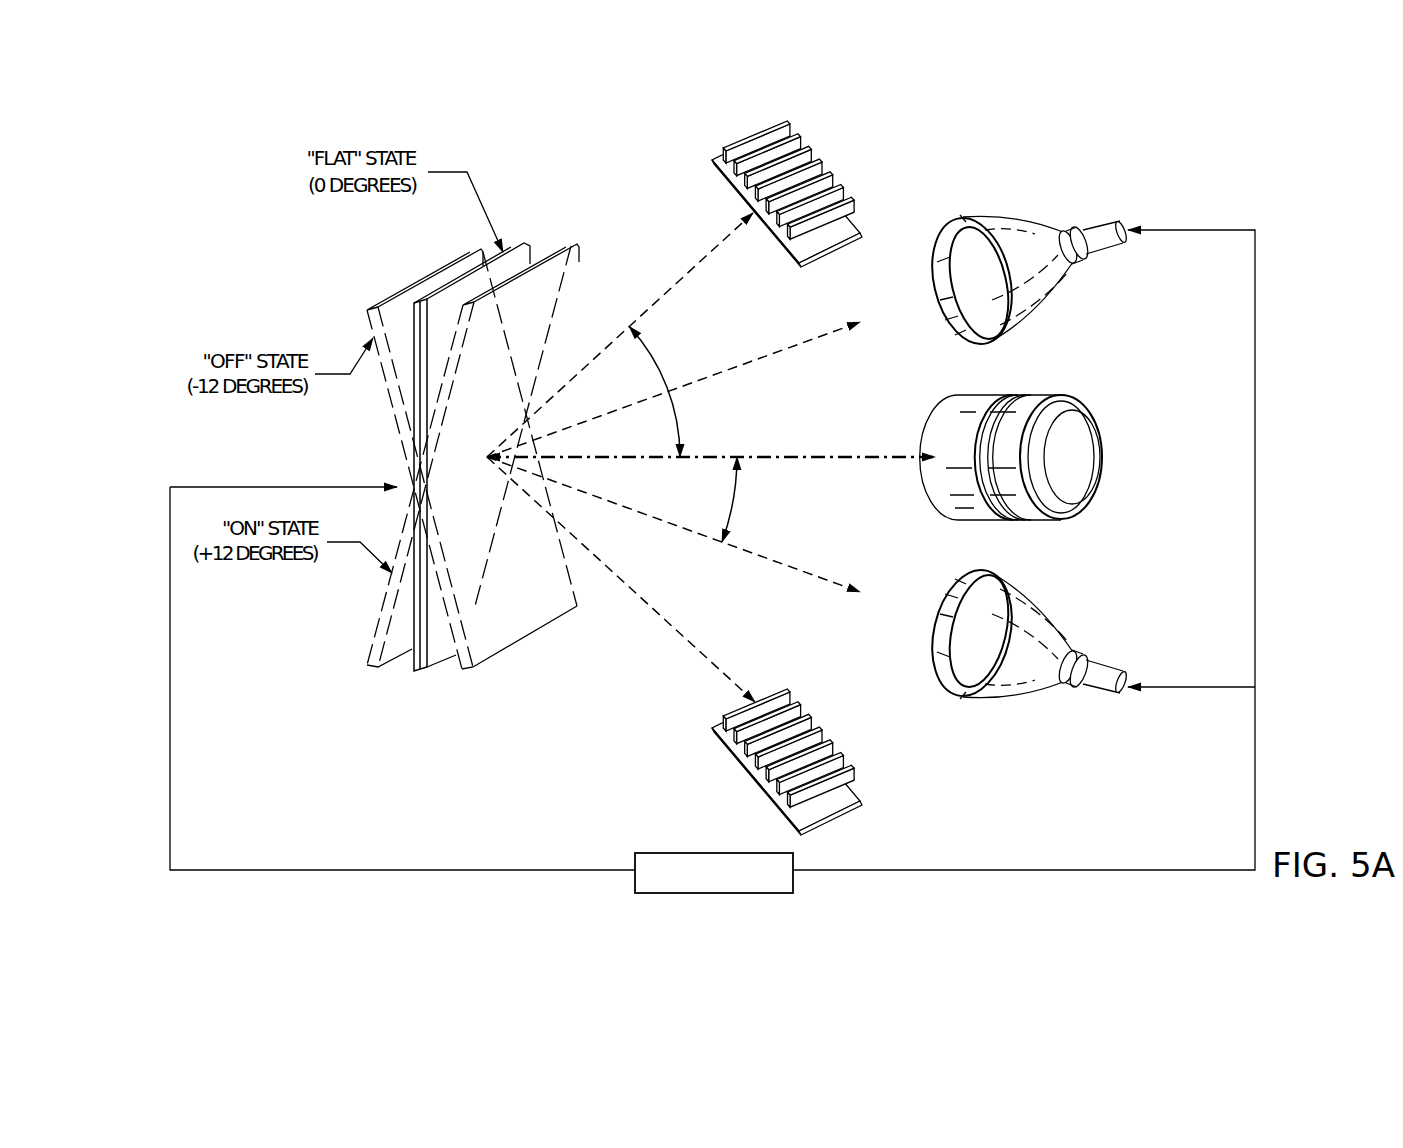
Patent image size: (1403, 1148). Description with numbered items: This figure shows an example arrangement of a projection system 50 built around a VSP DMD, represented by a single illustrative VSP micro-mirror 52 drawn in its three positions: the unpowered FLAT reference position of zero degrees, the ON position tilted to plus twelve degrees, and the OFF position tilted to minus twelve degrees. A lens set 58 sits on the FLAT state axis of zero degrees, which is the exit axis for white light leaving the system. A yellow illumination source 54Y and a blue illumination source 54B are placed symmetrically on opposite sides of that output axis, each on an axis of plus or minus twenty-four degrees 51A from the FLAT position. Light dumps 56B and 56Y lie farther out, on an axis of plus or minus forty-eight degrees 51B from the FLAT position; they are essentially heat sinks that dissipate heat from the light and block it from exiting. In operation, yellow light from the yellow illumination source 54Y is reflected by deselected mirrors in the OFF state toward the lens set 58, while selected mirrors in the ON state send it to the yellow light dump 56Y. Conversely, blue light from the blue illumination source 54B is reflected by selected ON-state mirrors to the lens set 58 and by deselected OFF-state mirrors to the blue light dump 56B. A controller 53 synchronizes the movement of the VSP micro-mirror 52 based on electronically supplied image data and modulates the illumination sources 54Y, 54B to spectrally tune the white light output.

The projection system 50 is at (1182, 150).
The VSP micro-mirror 52 is at (400, 262).
The controller 53 is at (635, 878).
The yellow illumination source 54Y is at (1000, 217).
The blue illumination source 54B is at (990, 700).
The blue light dump 56B is at (755, 133).
The yellow light dump 56Y is at (832, 822).
The lens set 58 is at (1093, 427).
The +/-24 degree axis 51A is at (737, 500).
The +/-48 degree axis 51B is at (663, 370).